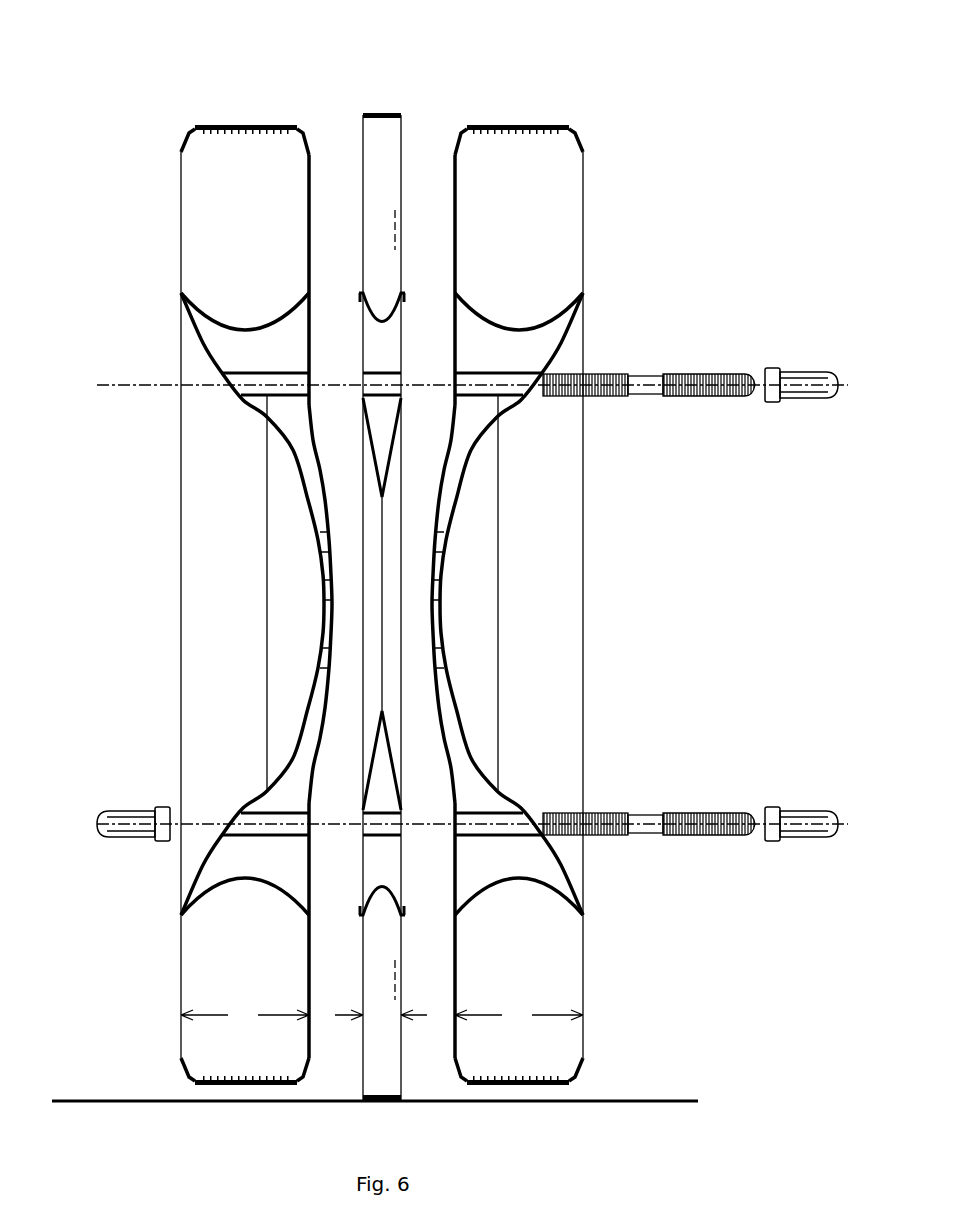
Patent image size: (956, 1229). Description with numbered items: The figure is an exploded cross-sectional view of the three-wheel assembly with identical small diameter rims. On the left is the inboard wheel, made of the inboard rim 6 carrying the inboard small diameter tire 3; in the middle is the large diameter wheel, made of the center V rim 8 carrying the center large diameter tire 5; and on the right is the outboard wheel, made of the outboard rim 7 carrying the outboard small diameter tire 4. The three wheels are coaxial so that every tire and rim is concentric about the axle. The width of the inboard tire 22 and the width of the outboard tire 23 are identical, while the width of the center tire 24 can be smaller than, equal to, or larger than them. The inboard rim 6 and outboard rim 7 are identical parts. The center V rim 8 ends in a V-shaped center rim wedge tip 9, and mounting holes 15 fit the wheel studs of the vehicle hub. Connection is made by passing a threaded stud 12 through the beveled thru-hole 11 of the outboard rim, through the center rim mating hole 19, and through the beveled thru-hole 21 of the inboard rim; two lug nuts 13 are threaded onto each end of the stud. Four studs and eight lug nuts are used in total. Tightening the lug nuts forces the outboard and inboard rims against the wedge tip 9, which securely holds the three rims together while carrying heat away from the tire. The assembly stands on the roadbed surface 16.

The inboard small diameter tire 3 is at (237, 148).
The outboard small diameter tire 4 is at (515, 150).
The center large diameter tire 5 is at (382, 125).
The inboard rim 6 is at (228, 345).
The outboard rim 7 is at (540, 345).
The center V rim 8 is at (382, 345).
The center rim wedge tip 9 is at (382, 455).
The thru-hole in rim with beveled edge 11 is at (497, 378).
The threaded stud 12 is at (649, 822).
The lug nut 13 is at (808, 398).
The mounting holes 15 is at (319, 655).
The roadbed surface 16 is at (652, 1098).
The center large diameter rim mating hole 19 is at (383, 378).
The thru-hole in rim with beveled edge 21 is at (270, 387).
The width of inboard small diameter tire 22 is at (245, 1015).
The width of outboard small diameter tire 23 is at (519, 1015).
The width of center large diameter tire 24 is at (381, 1015).